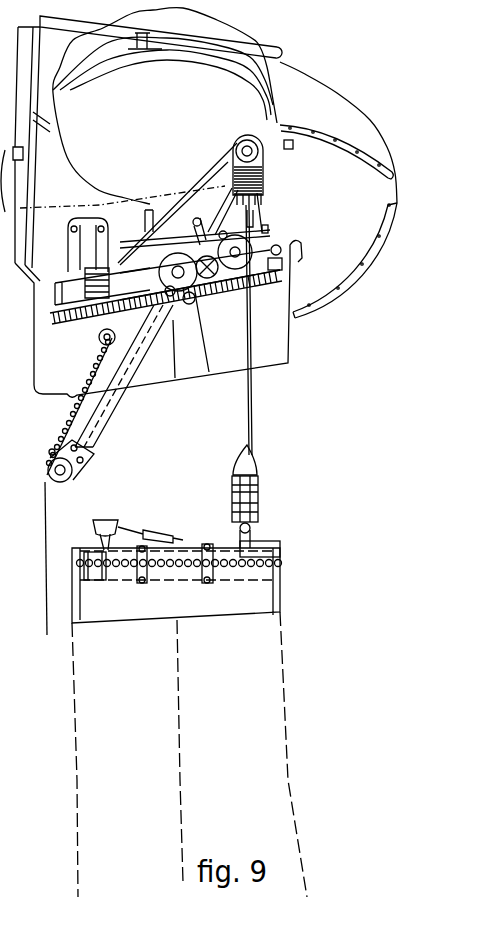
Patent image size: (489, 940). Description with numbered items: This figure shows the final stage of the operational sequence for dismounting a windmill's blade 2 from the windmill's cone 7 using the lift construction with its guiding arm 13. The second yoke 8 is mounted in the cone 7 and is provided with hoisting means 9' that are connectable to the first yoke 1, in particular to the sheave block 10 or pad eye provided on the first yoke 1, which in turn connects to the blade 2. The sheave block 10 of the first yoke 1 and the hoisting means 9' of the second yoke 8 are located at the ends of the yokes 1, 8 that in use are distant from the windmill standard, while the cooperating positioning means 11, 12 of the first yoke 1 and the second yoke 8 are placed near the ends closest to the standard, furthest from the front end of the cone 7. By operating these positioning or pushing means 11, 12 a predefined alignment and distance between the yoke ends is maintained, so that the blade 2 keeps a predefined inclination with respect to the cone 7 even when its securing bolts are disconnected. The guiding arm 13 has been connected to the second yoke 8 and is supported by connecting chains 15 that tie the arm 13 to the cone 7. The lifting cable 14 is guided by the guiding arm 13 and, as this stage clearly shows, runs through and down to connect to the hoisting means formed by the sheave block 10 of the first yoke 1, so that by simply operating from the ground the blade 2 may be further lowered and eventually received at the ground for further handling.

The first yoke 1 is at (170, 585).
The blade 2 is at (278, 719).
The cone 7 is at (298, 355).
The second yoke 8 is at (116, 248).
The hoisting means 9' is at (307, 114).
The sheave block 10 is at (267, 500).
The positioning means 11 is at (109, 522).
The positioning means 12 is at (97, 343).
The guiding arm 13 is at (119, 405).
The lifting cable 14 is at (254, 412).
The connecting chains 15 is at (88, 390).